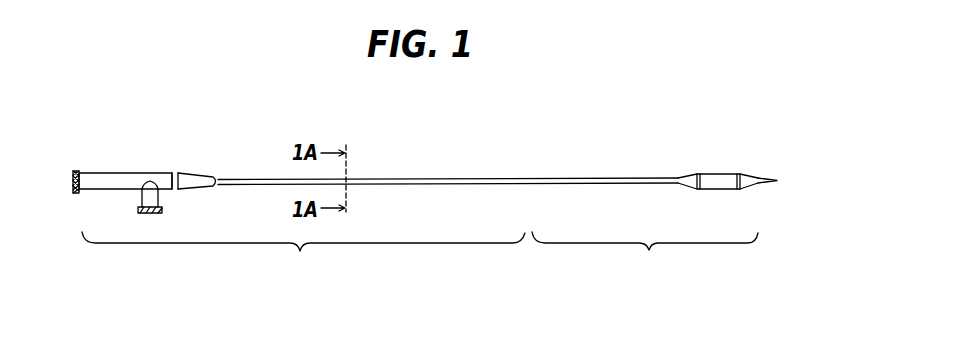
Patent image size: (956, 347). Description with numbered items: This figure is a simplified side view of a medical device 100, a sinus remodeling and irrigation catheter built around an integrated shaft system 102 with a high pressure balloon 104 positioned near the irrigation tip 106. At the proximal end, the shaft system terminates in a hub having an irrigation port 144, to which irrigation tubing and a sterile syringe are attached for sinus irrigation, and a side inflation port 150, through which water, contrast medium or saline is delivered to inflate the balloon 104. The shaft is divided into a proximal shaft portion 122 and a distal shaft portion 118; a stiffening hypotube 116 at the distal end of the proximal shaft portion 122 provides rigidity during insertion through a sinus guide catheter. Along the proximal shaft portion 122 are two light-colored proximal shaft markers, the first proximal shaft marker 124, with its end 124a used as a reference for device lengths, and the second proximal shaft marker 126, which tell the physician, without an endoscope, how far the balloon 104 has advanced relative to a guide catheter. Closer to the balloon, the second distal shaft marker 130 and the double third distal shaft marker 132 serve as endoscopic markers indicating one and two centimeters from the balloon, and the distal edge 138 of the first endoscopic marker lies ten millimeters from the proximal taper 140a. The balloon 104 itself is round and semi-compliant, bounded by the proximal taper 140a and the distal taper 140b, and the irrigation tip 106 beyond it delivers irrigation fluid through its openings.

The medical device 100 is at (268, 160).
The integrated shaft system 102 is at (293, 186).
The high pressure balloon 104 is at (713, 174).
The irrigation tip 106 is at (770, 179).
The hypotube 116 is at (432, 177).
The distal shaft portion 118 is at (645, 254).
The proximal shaft portion 122 is at (303, 256).
The first proximal shaft marker 124 is at (378, 185).
The end of the first shaft marker 124a is at (410, 185).
The second proximal shaft marker 126 is at (452, 185).
The second distal shaft marker 130 is at (653, 178).
The third distal shaft marker 132 is at (623, 178).
The distal edge of the first endoscopic marker 138 is at (675, 178).
The proximal taper of the balloon 140a is at (697, 190).
The distal taper of the balloon 140b is at (742, 190).
The irrigation port 144 is at (78, 170).
The inflation port 150 is at (142, 210).